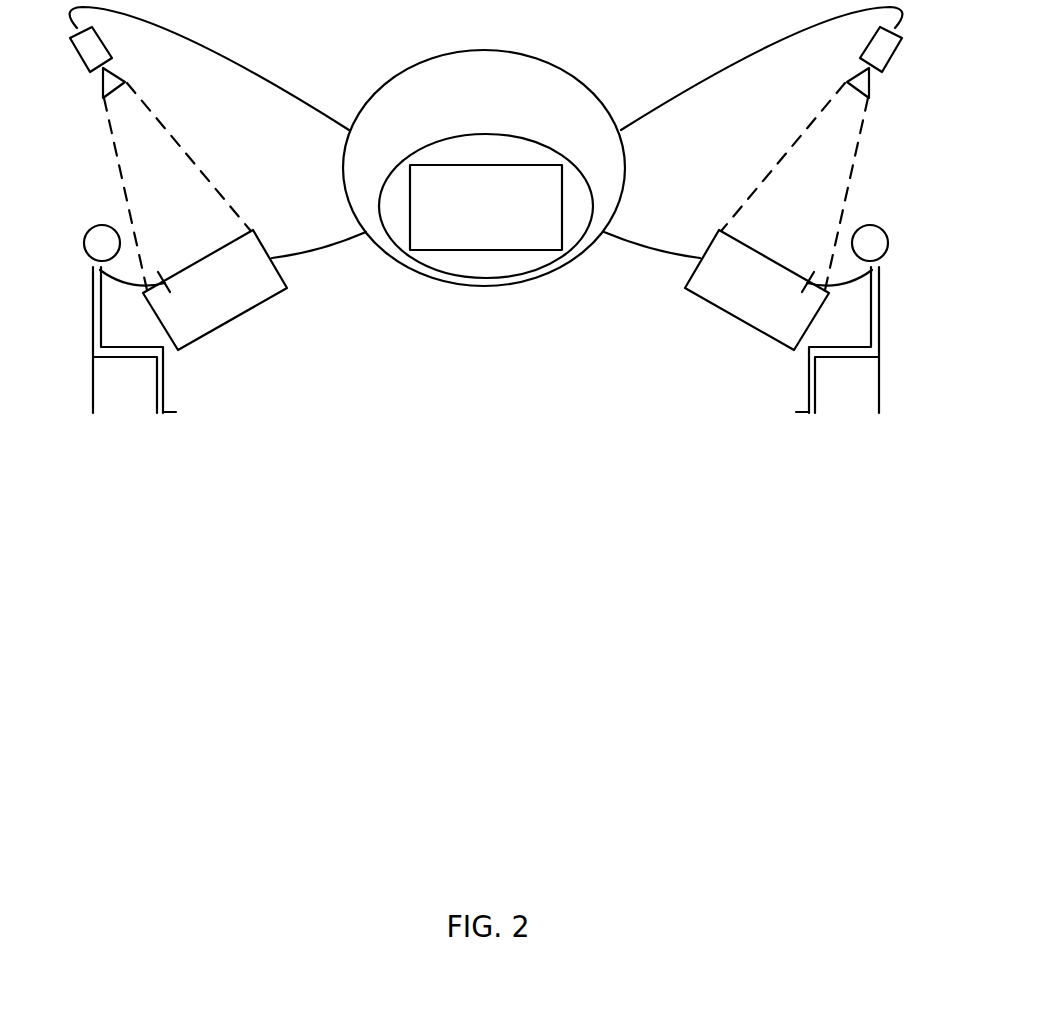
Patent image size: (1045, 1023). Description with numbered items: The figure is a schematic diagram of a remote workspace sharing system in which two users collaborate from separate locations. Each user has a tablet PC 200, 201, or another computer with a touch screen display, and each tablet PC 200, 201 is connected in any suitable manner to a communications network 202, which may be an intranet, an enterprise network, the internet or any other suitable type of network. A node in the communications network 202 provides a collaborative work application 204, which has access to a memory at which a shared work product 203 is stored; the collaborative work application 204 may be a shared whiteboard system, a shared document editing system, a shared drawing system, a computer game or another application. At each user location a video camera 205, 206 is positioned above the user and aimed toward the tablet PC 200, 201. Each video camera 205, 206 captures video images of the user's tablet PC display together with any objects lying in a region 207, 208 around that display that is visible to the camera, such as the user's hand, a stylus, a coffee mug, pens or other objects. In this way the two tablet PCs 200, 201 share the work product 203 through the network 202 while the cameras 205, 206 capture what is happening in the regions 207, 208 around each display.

The tablet PC 200 is at (232, 322).
The tablet PC 201 is at (740, 320).
The communications network 202 is at (484, 50).
The shared work product 203 is at (486, 250).
The collaborative work application 204 is at (578, 238).
The video camera 205 is at (80, 56).
The video camera 206 is at (892, 56).
The region 207 is at (135, 170).
The region 208 is at (847, 174).